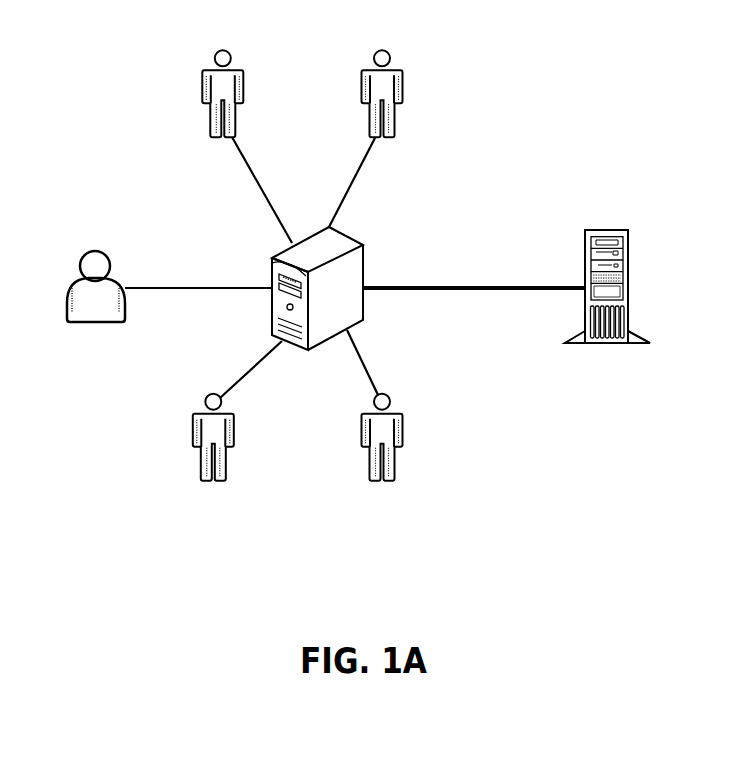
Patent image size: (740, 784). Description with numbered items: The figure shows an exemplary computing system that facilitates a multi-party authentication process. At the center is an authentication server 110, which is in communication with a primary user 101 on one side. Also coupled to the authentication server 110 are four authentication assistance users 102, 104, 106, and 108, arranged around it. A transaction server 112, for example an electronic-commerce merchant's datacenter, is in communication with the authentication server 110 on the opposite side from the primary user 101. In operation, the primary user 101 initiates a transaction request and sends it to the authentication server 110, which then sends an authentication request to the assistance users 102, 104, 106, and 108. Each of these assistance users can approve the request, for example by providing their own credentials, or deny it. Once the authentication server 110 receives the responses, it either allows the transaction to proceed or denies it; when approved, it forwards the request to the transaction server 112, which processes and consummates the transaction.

The primary user 101 is at (100, 251).
The authentication assistance user 102 is at (221, 49).
The authentication assistance user 104 is at (380, 49).
The authentication assistance user 106 is at (217, 482).
The authentication assistance user 108 is at (381, 482).
The authentication server 110 is at (363, 250).
The transaction server 112 is at (607, 229).